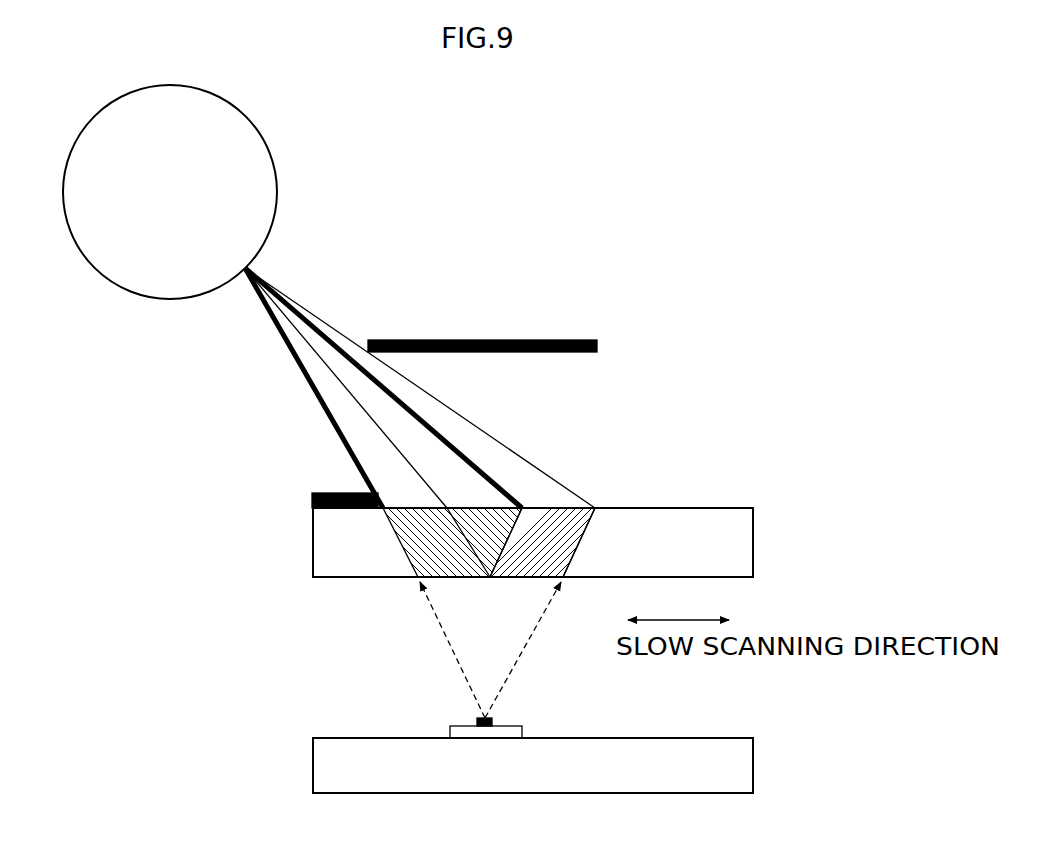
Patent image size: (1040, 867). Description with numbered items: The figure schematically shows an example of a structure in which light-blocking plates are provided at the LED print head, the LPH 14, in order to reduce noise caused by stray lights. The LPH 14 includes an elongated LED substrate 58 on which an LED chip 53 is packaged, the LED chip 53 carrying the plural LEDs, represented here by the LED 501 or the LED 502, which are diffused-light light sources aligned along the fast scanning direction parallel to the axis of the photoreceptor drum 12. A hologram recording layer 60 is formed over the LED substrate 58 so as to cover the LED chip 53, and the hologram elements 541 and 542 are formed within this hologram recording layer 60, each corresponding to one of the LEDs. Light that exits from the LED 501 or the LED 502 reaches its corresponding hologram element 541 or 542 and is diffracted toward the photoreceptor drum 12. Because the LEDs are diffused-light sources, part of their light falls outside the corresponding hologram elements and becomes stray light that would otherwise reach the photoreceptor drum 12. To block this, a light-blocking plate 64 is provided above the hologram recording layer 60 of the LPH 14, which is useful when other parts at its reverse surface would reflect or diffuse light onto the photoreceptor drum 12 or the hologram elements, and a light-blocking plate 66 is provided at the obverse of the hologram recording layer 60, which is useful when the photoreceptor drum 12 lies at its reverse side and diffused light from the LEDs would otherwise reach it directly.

The photoreceptor drum 12 is at (140, 299).
The LED print head 14 is at (545, 486).
The light-blocking plate 64 is at (543, 340).
The light-blocking plate 66 is at (322, 493).
The hologram recording layer 60 is at (743, 550).
The hologram element 541 is at (492, 522).
The hologram element 542 is at (556, 522).
The LED substrate 58 is at (733, 768).
The LED chip 53 is at (450, 735).
The LED 501 is at (574, 705).
The LED 502 is at (494, 720).